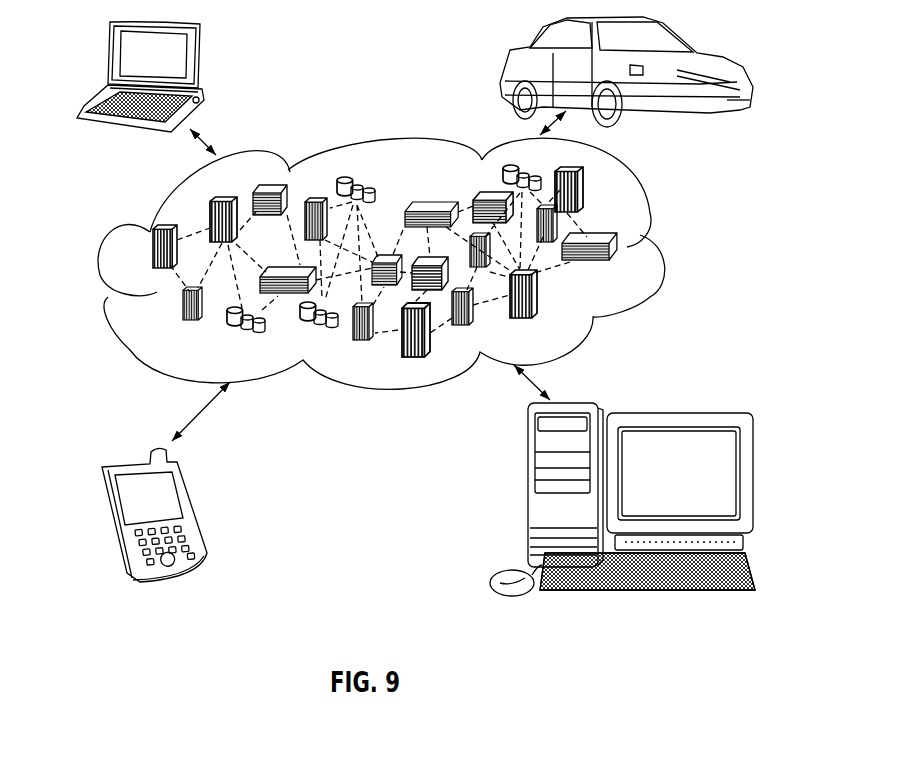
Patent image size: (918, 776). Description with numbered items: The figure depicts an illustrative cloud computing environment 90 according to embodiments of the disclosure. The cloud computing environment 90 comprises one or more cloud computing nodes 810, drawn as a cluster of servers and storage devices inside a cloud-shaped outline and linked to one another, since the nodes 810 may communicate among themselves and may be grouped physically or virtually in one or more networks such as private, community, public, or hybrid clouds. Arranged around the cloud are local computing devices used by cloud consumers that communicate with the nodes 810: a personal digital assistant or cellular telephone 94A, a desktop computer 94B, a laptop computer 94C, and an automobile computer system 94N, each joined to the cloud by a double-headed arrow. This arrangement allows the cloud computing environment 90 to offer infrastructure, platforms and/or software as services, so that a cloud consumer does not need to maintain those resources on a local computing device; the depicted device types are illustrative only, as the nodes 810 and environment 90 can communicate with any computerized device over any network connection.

The cloud computing environment 90 is at (650, 213).
The cloud computing node 810 is at (638, 267).
The personal digital assistant or cellular telephone 94A is at (192, 505).
The desktop computer 94B is at (530, 490).
The laptop computer 94C is at (201, 58).
The automobile computer system 94N is at (510, 63).